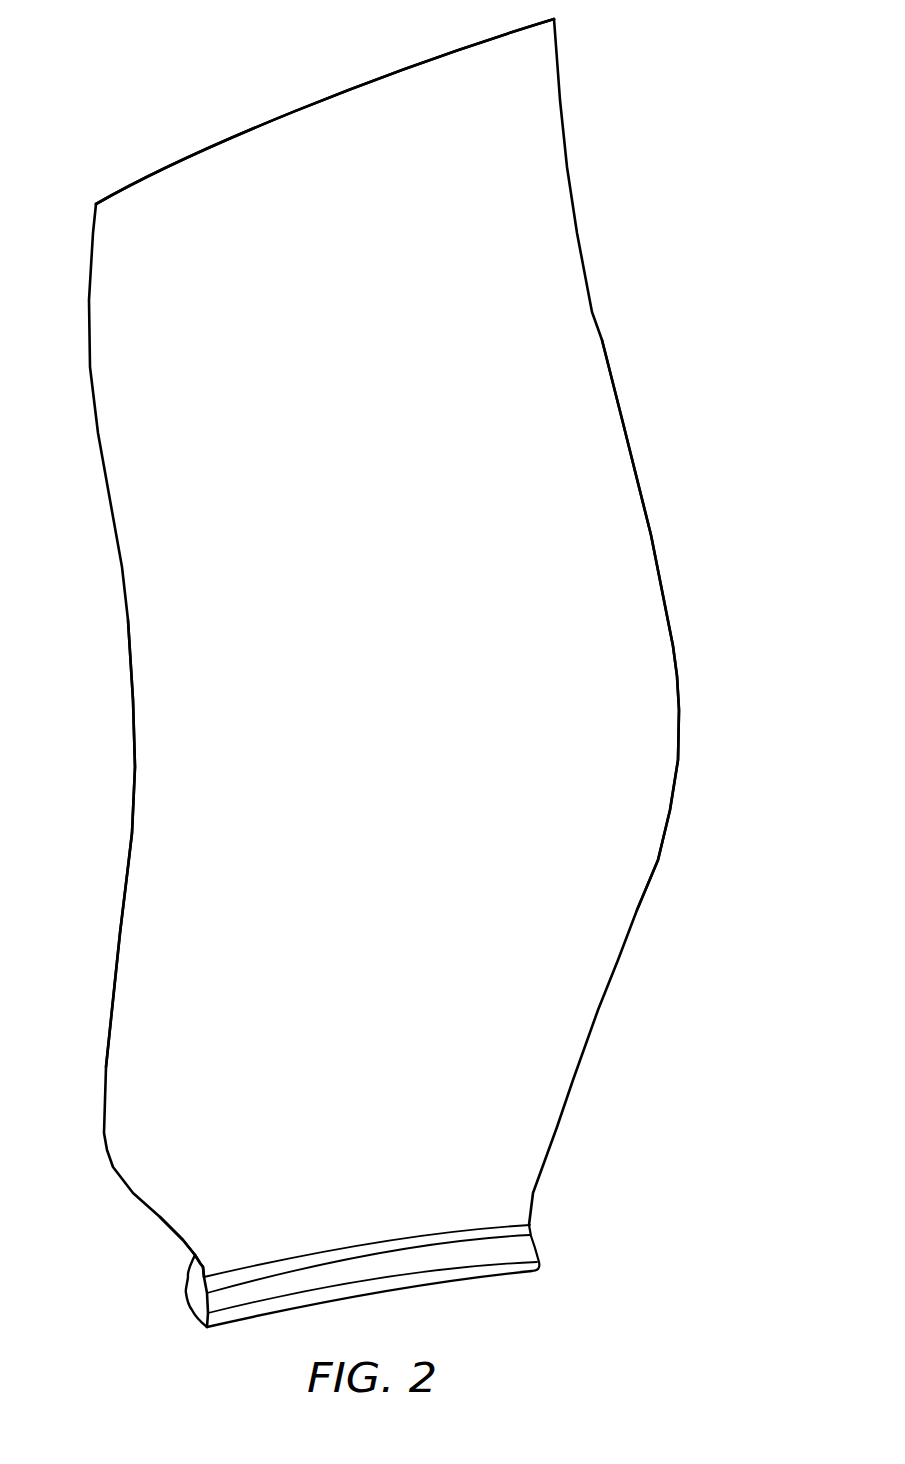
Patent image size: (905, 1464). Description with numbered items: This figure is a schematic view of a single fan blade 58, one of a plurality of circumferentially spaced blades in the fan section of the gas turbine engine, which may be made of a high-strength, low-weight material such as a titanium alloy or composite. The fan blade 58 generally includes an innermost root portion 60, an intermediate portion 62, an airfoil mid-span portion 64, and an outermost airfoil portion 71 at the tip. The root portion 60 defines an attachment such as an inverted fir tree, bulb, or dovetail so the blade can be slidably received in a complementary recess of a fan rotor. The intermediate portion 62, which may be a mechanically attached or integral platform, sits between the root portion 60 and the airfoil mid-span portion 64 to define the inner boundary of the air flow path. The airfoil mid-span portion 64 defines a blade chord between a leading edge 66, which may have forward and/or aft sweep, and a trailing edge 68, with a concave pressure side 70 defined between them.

The fan blade 58 is at (557, 320).
The root portion 60 is at (470, 1253).
The intermediate portion 62 is at (220, 1253).
The airfoil mid-span portion 64 is at (380, 656).
The leading edge 66 is at (677, 655).
The trailing edge 68 is at (125, 857).
The concave pressure side 70 is at (335, 412).
The outermost airfoil portion 71 is at (272, 118).